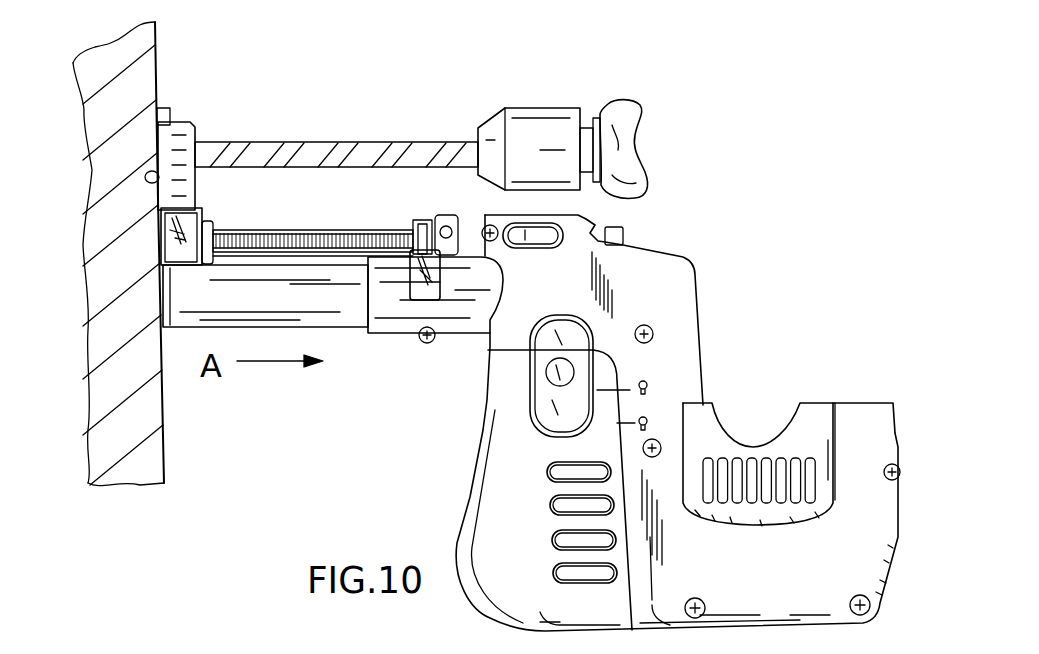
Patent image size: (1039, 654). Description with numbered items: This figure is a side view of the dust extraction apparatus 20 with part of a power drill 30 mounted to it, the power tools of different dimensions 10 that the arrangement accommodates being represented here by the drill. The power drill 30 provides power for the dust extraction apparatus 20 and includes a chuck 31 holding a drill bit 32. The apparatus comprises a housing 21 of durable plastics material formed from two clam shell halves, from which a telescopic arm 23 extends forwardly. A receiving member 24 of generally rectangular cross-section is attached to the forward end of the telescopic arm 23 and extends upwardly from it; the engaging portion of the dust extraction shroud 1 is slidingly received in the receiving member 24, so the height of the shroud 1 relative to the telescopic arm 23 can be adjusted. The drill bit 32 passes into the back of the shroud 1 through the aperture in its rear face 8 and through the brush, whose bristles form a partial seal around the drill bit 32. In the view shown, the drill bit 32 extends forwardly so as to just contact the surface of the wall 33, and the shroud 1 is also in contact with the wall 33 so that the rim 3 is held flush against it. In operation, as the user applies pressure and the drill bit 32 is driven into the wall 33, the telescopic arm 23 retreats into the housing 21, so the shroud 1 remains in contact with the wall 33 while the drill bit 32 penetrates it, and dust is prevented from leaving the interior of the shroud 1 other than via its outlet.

The dust extraction shroud 1 is at (207, 82).
The rim 3 is at (159, 176).
The rear face 8 is at (200, 132).
The spacer plate 10 is at (183, 112).
The dust extraction apparatus 20 is at (730, 282).
The housing 21 is at (650, 270).
The telescopic arm 23 is at (343, 297).
The receiving member 24 is at (160, 262).
The power drill 30 is at (615, 115).
The chuck 31 is at (537, 128).
The drill bit 32 is at (372, 150).
The wall 33 is at (164, 436).